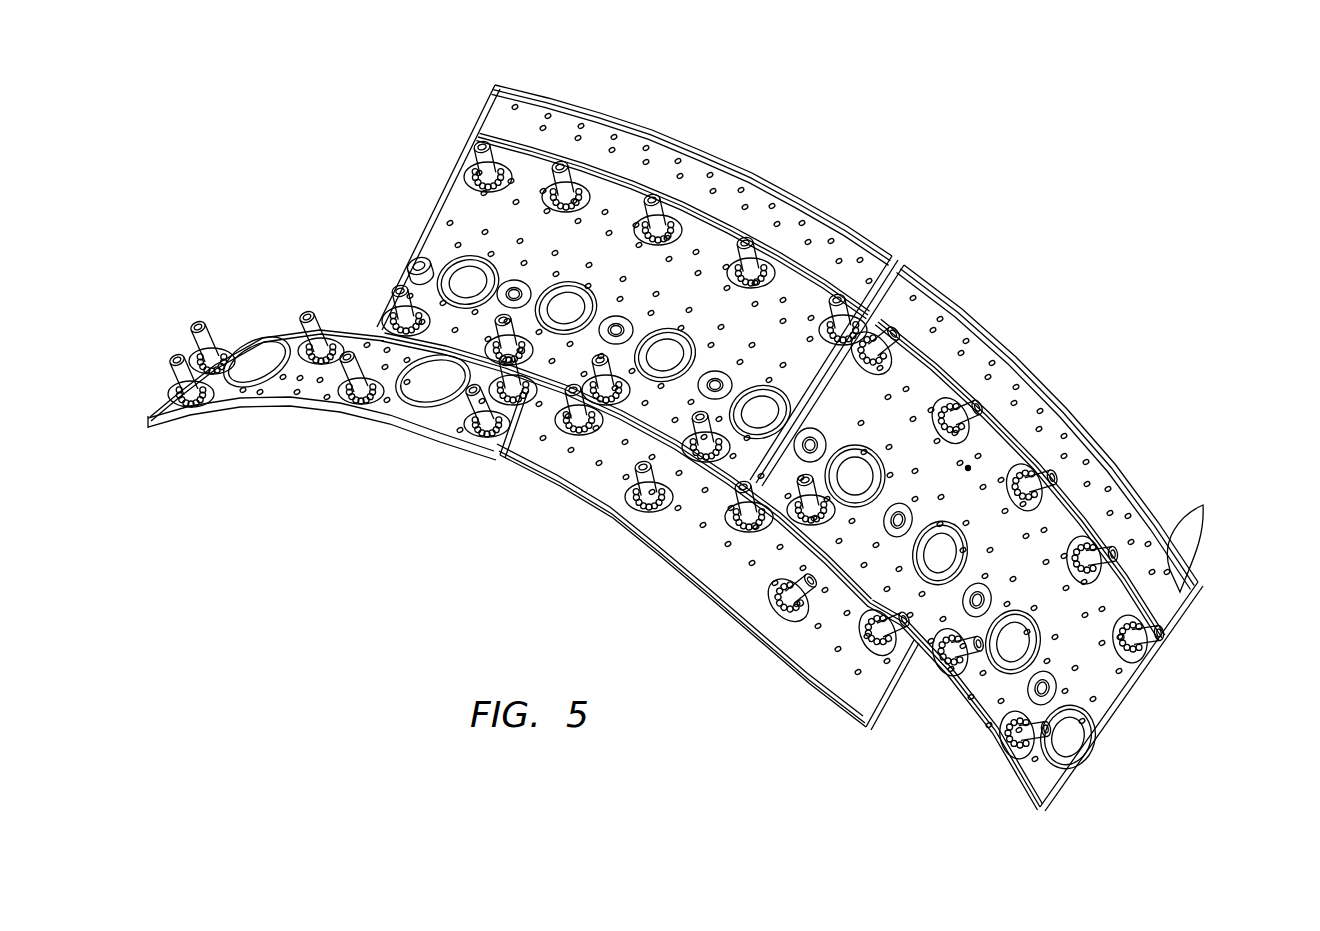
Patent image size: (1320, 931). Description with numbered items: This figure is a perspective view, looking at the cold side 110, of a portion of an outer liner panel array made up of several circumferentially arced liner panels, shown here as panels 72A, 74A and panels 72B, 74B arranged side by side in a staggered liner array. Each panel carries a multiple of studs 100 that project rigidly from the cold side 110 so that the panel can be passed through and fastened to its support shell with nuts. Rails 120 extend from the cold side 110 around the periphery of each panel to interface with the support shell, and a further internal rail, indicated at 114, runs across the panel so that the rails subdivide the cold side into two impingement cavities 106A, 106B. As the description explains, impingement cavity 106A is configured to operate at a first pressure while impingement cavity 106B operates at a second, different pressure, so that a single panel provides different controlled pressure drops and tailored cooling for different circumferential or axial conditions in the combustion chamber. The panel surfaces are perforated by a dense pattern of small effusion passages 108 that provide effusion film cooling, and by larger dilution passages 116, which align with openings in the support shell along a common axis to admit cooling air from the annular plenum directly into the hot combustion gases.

The rear panel 72B is at (782, 439).
The rear panel assembly 74B is at (782, 439).
The front panel 72A is at (533, 563).
The front panel assembly 74A is at (832, 711).
The studs 100 is at (748, 240).
The impingement cavity 106A is at (447, 236).
The impingement cavity 106B is at (555, 122).
The effusion passages 108 is at (968, 468).
The cold side 110 is at (1095, 673).
The rail 114 is at (948, 360).
The dilution passages 116 is at (940, 540).
The rails 120 is at (1207, 537).